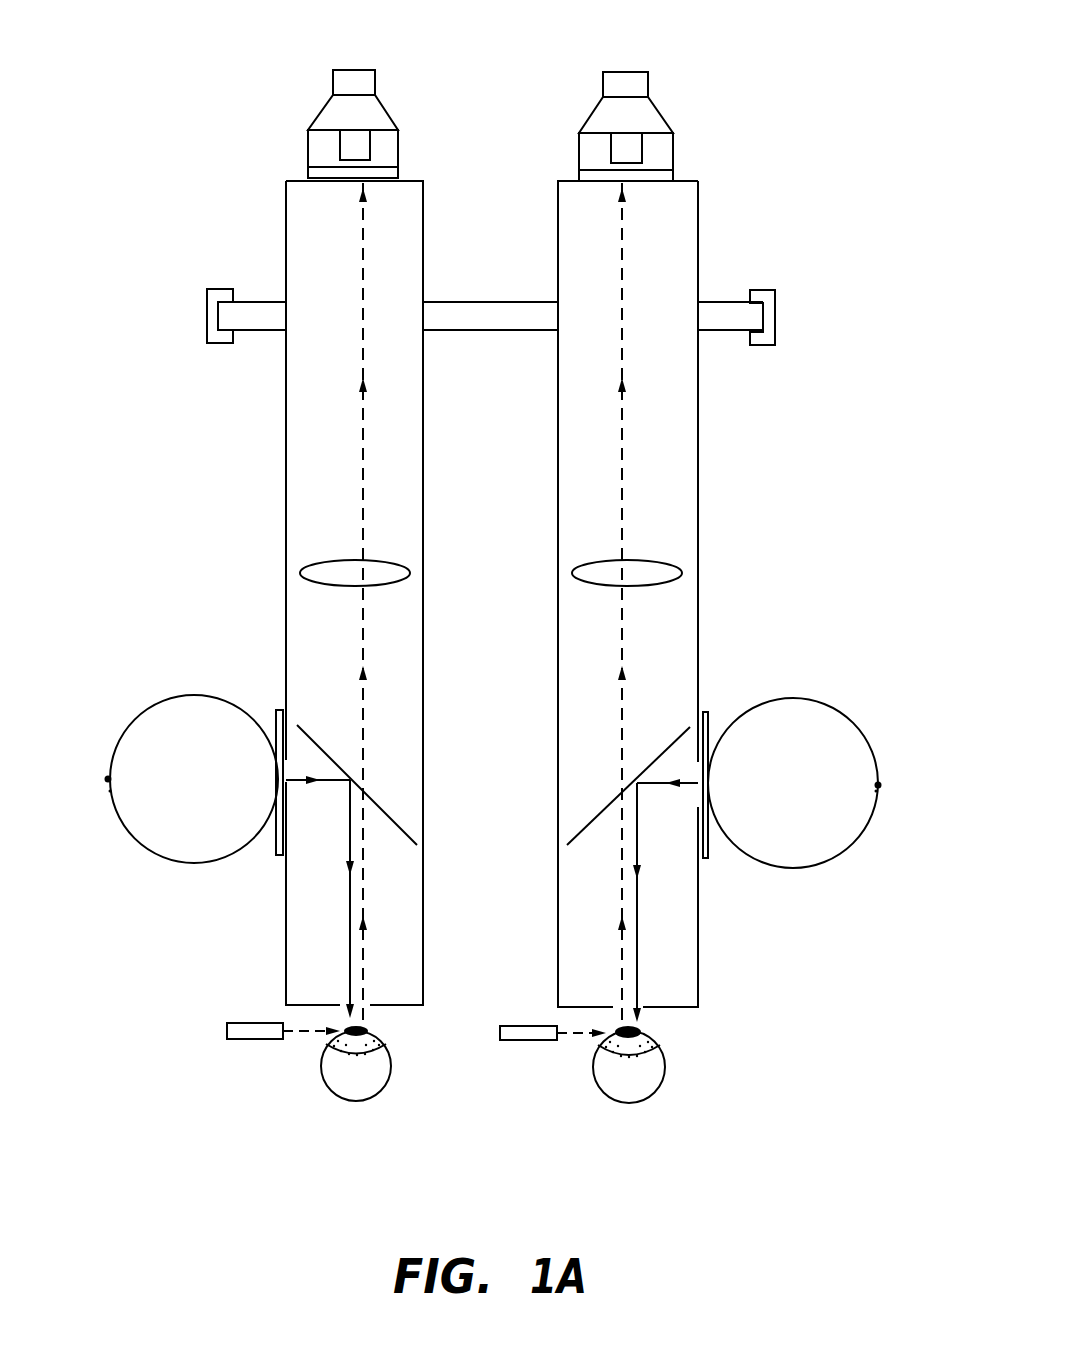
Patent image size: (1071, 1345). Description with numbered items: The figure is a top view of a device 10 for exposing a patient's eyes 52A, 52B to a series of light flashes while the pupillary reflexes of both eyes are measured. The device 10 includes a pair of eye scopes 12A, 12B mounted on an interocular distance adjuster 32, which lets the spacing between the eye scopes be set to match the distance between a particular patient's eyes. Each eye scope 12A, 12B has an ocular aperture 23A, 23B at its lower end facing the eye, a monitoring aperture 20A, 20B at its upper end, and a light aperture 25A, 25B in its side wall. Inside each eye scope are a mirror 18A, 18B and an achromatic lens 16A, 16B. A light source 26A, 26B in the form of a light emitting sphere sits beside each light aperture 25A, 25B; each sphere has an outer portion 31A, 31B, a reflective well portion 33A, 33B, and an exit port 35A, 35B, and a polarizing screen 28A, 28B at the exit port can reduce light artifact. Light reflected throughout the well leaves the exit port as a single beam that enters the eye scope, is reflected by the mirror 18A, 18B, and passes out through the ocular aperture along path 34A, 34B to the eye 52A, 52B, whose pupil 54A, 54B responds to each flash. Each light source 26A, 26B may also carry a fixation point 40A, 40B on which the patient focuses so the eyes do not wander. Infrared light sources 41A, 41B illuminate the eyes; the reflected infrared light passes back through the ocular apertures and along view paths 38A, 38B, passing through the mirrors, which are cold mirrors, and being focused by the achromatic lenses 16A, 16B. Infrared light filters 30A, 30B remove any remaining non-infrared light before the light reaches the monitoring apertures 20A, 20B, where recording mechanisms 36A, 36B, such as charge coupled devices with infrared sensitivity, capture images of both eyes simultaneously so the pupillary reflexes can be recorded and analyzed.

The device 10 is at (188, 99).
The eye scope 12A is at (286, 407).
The eye scope 12B is at (698, 407).
The achromatic lens 16A is at (326, 560).
The achromatic lens 16B is at (650, 560).
The mirror 18A is at (328, 753).
The mirror 18B is at (651, 760).
The monitoring aperture 20A is at (348, 182).
The monitoring aperture 20B is at (637, 183).
The ocular aperture 23A is at (345, 1005).
The ocular aperture 23B is at (640, 1007).
The light aperture 25A is at (290, 794).
The light aperture 25B is at (697, 793).
The light source 26A is at (203, 695).
The light source 26B is at (785, 700).
The polarizing screen 28A is at (278, 710).
The polarizing screen 28B is at (705, 712).
The infrared light filter 30A is at (398, 174).
The infrared light filter 30B is at (673, 175).
The outer portion 31A is at (276, 810).
The outer portion 31B is at (708, 757).
The interocular distance adjuster 32 is at (250, 303).
The reflective well portion 33A is at (110, 792).
The reflective well portion 33B is at (876, 790).
The path 34A is at (350, 920).
The path 34B is at (637, 920).
The exit port 35A is at (262, 765).
The exit port 35B is at (724, 788).
The recording mechanism 36A is at (352, 72).
The recording mechanism 36B is at (624, 72).
The view path 38A is at (362, 442).
The view path 38B is at (623, 442).
The fixation point 40A is at (106, 779).
The fixation point 40B is at (917, 765).
The light source 41A is at (257, 1039).
The light source 41B is at (533, 1040).
The eye 52A is at (390, 1067).
The eye 52B is at (665, 1070).
The pupil 54A is at (370, 1030).
The pupil 54B is at (642, 1032).